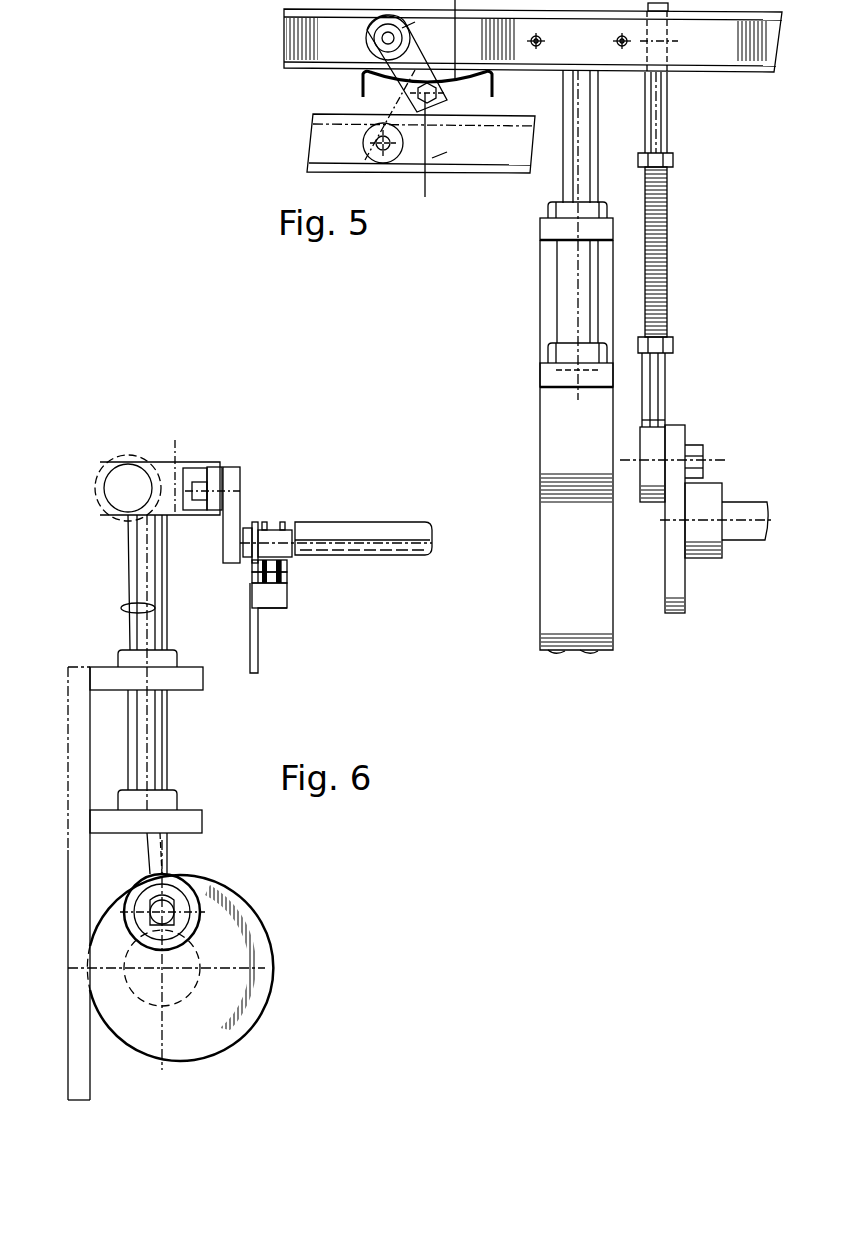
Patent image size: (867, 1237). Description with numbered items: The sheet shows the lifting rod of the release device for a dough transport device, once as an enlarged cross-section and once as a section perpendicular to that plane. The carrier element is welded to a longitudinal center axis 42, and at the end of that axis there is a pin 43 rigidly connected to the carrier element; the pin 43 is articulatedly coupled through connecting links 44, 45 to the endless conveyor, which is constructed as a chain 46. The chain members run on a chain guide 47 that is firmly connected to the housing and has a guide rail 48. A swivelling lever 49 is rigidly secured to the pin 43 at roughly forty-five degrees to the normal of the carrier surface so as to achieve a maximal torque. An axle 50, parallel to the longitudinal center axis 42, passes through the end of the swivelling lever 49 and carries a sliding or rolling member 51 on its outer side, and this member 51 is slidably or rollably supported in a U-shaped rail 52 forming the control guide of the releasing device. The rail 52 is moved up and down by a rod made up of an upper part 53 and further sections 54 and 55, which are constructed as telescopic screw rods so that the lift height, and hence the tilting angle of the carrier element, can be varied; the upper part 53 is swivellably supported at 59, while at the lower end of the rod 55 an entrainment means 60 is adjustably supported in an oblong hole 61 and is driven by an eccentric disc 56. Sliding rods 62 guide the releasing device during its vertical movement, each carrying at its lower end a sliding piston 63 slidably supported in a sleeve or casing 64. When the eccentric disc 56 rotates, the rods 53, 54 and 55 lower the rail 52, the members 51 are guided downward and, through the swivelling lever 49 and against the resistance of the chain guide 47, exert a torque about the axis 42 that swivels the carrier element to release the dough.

In FIG. 5, the longitudinal center axis 42 is at (410, 113).
In FIG. 6, the longitudinal center axis 42 is at (432, 543).
In FIG. 6, the pin 43 is at (290, 556).
In FIG. 6, the connecting link 44 is at (284, 522).
In FIG. 6, the connecting link 45 is at (281, 522).
In FIG. 6, the chain 46 is at (286, 582).
In FIG. 6, the chain guide 47 is at (285, 608).
In FIG. 6, the guide rail 48 is at (262, 591).
In FIG. 6, the swivelling lever 49 is at (254, 522).
In FIG. 6, the axle 50 is at (234, 510).
In FIG. 6, the sliding or rolling member 51 is at (215, 470).
In FIG. 6, the U-shaped rail 52 is at (177, 462).
In FIG. 5, the upper part of the rod 53 is at (660, 121).
In FIG. 6, the upper part of the rod 53 is at (125, 536).
In FIG. 5, the rod 54 is at (668, 258).
In FIG. 5, the rod 55 is at (665, 374).
In FIG. 6, the rod 55 is at (168, 840).
In FIG. 5, the eccentric disc 56 is at (680, 428).
In FIG. 6, the eccentric disc 56 is at (230, 946).
In FIG. 6, the swivel support 59 is at (100, 483).
In FIG. 6, the entrainment means 60 is at (172, 906).
In FIG. 6, the oblong hole 61 is at (190, 880).
In FIG. 5, the sliding rod 62 is at (568, 170).
In FIG. 5, the sliding piston 63 is at (553, 374).
In FIG. 5, the sleeve or casing 64 is at (553, 455).